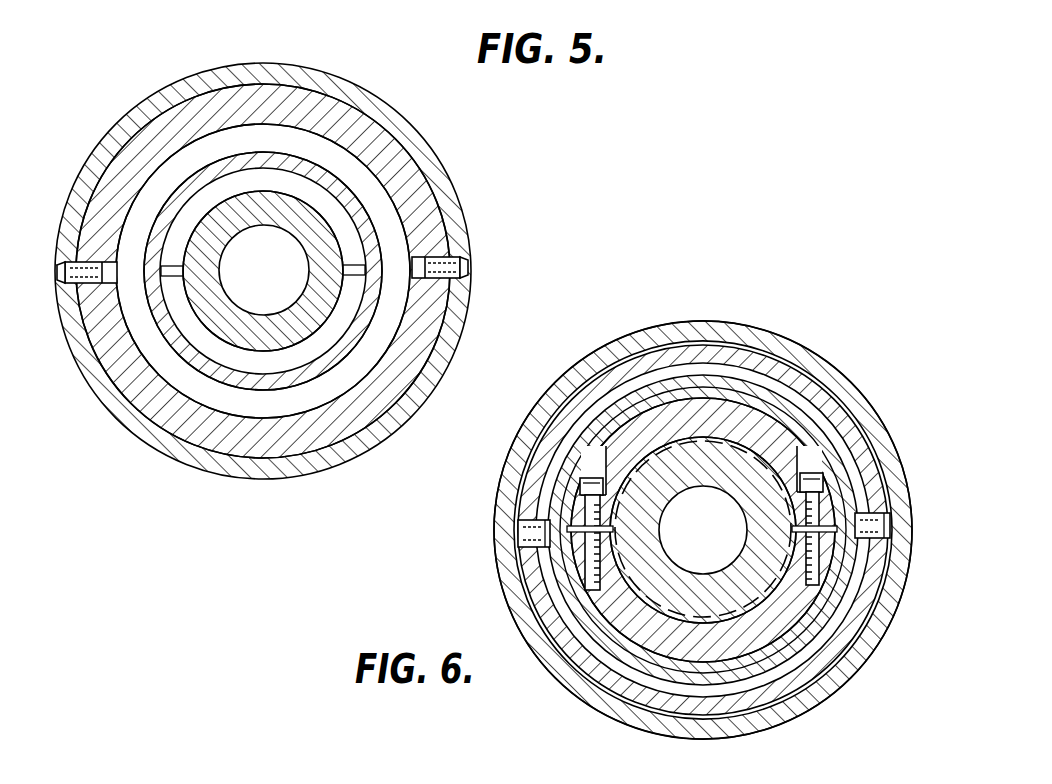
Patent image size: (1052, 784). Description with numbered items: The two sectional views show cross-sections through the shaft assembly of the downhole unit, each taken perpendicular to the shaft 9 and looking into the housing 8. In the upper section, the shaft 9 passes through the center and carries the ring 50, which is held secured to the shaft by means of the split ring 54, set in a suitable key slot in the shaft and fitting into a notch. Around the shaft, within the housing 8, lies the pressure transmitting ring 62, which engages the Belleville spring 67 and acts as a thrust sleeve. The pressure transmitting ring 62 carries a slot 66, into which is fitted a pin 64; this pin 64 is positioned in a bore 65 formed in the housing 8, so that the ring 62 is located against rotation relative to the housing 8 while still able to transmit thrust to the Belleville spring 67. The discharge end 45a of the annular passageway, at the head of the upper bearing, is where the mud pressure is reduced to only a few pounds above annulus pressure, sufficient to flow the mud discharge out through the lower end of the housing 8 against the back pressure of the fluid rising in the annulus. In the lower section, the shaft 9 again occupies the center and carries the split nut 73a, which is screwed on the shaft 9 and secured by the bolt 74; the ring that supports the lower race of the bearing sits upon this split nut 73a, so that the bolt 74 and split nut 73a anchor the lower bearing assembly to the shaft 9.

In FIG. 5, the housing 8 is at (275, 66).
In FIG. 6, the housing 8 is at (505, 590).
In FIG. 5, the shaft 9 is at (241, 225).
In FIG. 6, the shaft 9 is at (661, 528).
In FIG. 5, the discharge end of annular passageway 45a is at (310, 400).
In FIG. 5, the ring 50 is at (222, 162).
In FIG. 5, the split ring 54 is at (188, 220).
In FIG. 5, the pressure transmitting ring 62 is at (367, 138).
In FIG. 6, the pressure transmitting ring 62 is at (672, 335).
In FIG. 5, the pin 64 is at (72, 282).
In FIG. 5, the bore 65 is at (64, 292).
In FIG. 5, the slot 66 is at (78, 262).
In FIG. 5, the Belleville spring 67 is at (357, 178).
In FIG. 6, the split nut 73a is at (737, 405).
In FIG. 6, the bolt 74 is at (812, 478).